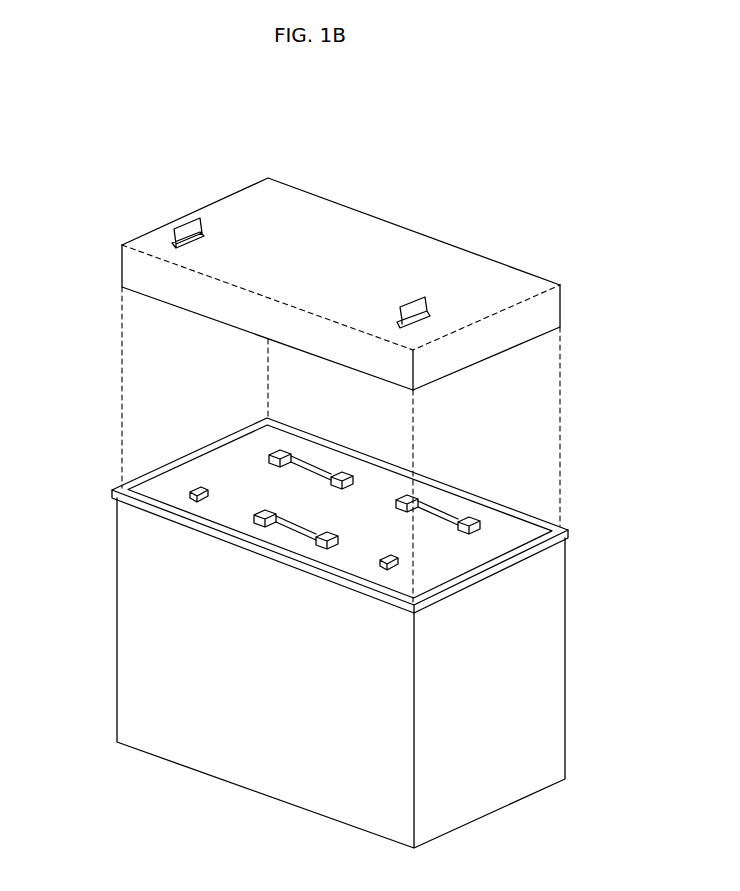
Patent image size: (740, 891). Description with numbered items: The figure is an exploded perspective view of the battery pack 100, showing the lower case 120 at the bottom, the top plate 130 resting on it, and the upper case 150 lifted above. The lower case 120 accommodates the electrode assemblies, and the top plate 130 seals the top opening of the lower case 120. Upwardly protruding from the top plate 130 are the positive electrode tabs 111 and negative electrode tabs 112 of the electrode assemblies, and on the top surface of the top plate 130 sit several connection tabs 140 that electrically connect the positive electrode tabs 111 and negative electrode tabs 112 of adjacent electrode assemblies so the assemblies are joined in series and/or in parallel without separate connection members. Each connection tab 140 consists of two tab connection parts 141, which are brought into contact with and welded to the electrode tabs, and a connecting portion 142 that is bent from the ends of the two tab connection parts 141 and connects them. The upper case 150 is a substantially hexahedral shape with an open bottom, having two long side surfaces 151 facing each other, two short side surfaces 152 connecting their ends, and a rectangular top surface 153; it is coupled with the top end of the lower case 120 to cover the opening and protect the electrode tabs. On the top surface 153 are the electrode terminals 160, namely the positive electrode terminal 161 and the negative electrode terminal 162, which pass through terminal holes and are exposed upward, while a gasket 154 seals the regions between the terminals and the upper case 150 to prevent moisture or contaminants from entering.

The battery pack 100 is at (610, 181).
The positive electrode tab 111 is at (197, 490).
The negative electrode tab 112 is at (260, 517).
The lower case 120 is at (563, 650).
The top plate 130 is at (505, 533).
The connection tab 140 is at (337, 543).
The tab connection part 141 is at (350, 470).
The connecting portion 142 is at (297, 452).
The upper case 150 is at (557, 300).
The long side surface 151 is at (152, 277).
The short side surface 152 is at (518, 330).
The top surface 153 is at (518, 283).
The gasket 154 is at (440, 310).
The electrode terminal 160 is at (475, 144).
The positive electrode terminal 161 is at (202, 222).
The negative electrode terminal 162 is at (414, 297).